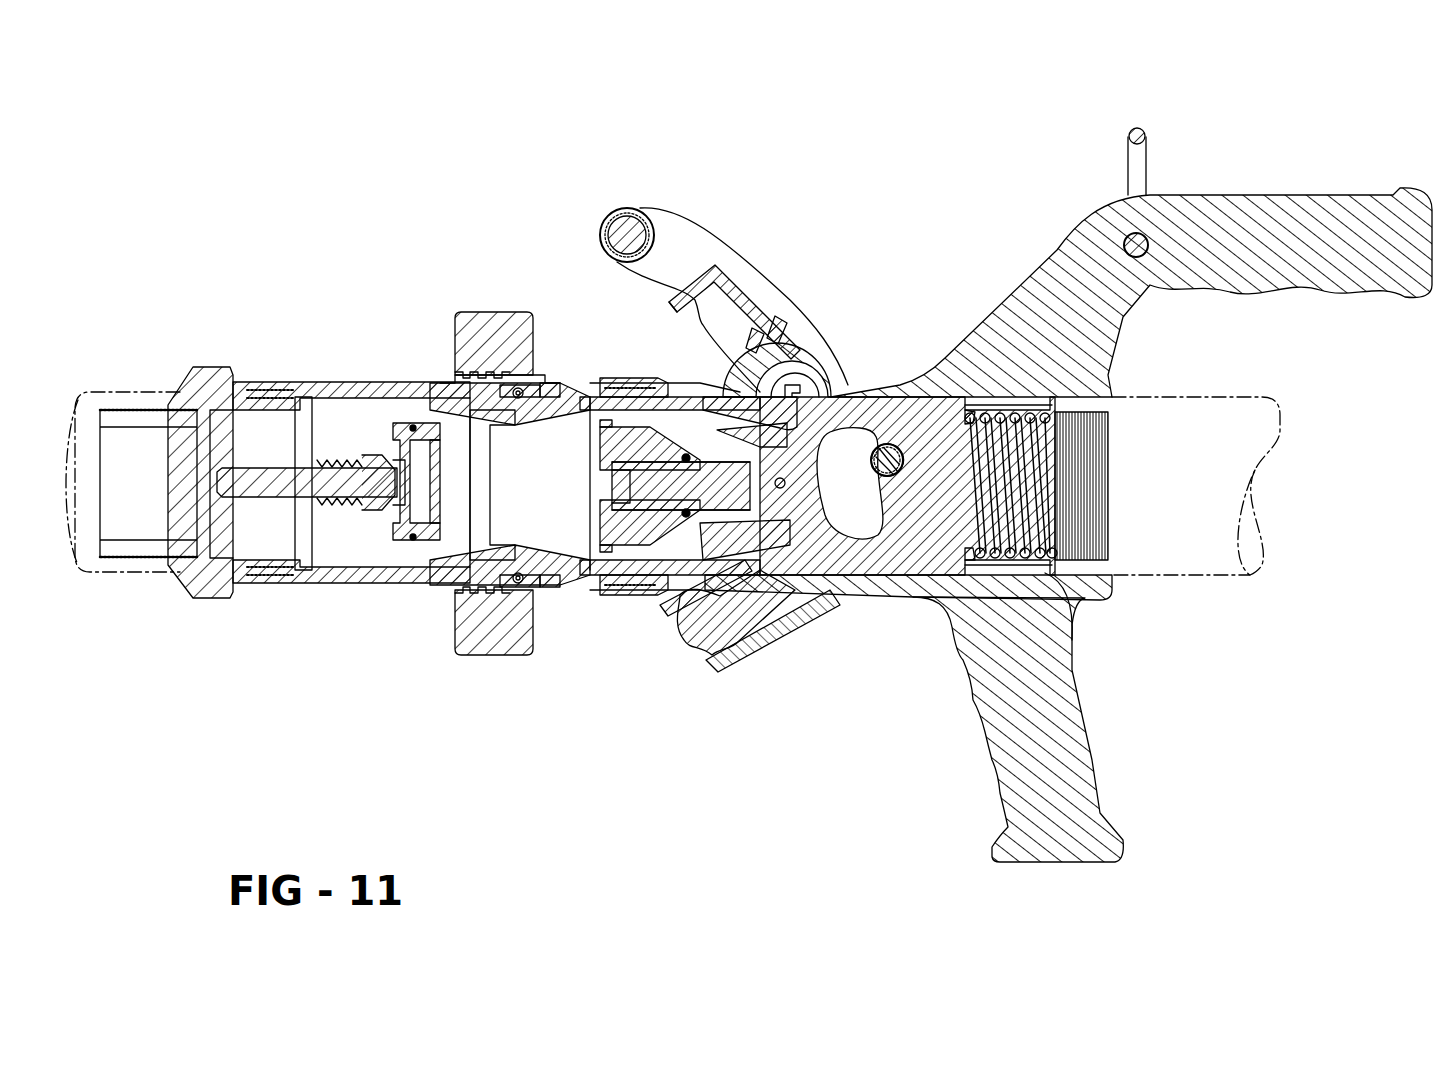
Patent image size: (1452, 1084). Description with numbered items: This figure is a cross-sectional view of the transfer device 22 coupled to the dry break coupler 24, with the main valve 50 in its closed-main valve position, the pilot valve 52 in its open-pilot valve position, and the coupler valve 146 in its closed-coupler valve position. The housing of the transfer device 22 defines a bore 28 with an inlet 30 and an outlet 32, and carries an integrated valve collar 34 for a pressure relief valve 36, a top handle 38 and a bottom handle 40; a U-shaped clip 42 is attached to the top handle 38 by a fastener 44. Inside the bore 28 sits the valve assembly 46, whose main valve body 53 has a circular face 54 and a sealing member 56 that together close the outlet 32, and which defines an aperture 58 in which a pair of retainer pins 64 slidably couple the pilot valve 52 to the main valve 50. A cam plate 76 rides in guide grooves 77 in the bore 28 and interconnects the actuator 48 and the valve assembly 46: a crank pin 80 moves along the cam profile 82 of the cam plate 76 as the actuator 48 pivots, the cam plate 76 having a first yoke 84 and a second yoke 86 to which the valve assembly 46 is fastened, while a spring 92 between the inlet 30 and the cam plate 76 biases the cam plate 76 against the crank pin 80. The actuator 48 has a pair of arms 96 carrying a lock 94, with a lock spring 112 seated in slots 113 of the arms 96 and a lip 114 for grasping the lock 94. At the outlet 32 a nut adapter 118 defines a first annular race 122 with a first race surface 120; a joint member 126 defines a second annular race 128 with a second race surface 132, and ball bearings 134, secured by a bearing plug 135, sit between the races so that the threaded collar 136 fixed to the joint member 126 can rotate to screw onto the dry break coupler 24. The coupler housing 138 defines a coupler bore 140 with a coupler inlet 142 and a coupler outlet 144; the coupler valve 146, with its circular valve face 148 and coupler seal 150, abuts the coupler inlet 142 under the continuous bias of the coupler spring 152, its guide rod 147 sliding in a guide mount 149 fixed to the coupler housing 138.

The transfer device 22 is at (1034, 495).
The dry break coupler 24 is at (319, 540).
The bore 28 is at (1098, 602).
The inlet 30 is at (1120, 500).
The outlet 32 is at (495, 420).
The valve collar 34 is at (735, 655).
The pressure relief valve 36 is at (720, 650).
The top handle 38 is at (1322, 210).
The bottom handle 40 is at (1088, 795).
The clip 42 is at (1147, 154).
The fastener 44 is at (1148, 245).
The valve assembly 46 is at (635, 485).
The actuator 48 is at (732, 264).
The main valve 50 is at (598, 448).
The pilot valve 52 is at (736, 510).
The main valve body 53 is at (600, 520).
The face 54 is at (612, 470).
The sealing member 56 is at (602, 428).
The aperture 58 is at (598, 483).
The retainer pins 64 is at (686, 455).
The cam plate 76 is at (817, 455).
The guide grooves 77 is at (715, 385).
The crank pin 80 is at (885, 442).
The cam profile 82 is at (855, 560).
The first yoke 84 is at (958, 470).
The second yoke 86 is at (790, 522).
The spring 92 is at (1070, 445).
The lock 94 is at (740, 290).
The arms 96 is at (712, 245).
The lock spring 112 is at (782, 320).
The slots 113 is at (762, 333).
The lip 114 is at (692, 305).
The nut adapter 118 is at (585, 383).
The first race surface 120 is at (455, 605).
The first annular race 122 is at (485, 545).
The joint member 126 is at (545, 590).
The second annular race 128 is at (532, 590).
The second race surface 132 is at (555, 383).
The ball bearings 134 is at (518, 388).
The bearing plug 135 is at (525, 385).
The threaded collar 136 is at (480, 322).
The coupler housing 138 is at (342, 382).
The coupler bore 140 is at (265, 565).
The coupler inlet 142 is at (447, 395).
The coupler outlet 144 is at (105, 425).
The coupler valve 146 is at (420, 543).
The guide rod 147 is at (255, 478).
The valve face 148 is at (420, 548).
The guide mount 149 is at (270, 400).
The coupler seal 150 is at (412, 425).
The coupler spring 152 is at (335, 505).